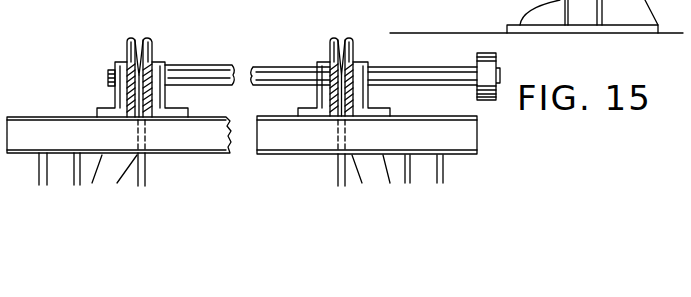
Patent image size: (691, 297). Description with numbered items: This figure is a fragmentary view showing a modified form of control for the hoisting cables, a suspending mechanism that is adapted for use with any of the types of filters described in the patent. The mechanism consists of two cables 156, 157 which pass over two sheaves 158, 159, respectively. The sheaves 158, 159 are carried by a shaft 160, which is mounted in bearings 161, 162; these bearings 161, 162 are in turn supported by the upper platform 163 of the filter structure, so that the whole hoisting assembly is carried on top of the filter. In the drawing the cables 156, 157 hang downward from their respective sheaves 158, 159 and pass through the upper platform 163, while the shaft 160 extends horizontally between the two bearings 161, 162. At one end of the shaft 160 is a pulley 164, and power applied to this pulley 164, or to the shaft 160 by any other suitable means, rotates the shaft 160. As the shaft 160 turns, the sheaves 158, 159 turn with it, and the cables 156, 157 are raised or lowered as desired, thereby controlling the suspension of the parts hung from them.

The cable 156 is at (147, 167).
The cable 157 is at (338, 165).
The sheave 158 is at (152, 52).
The sheave 159 is at (354, 52).
The shaft 160 is at (417, 74).
The bearing 161 is at (370, 97).
The bearing 162 is at (163, 92).
The upper platform 163 is at (467, 133).
The pulley 164 is at (491, 62).